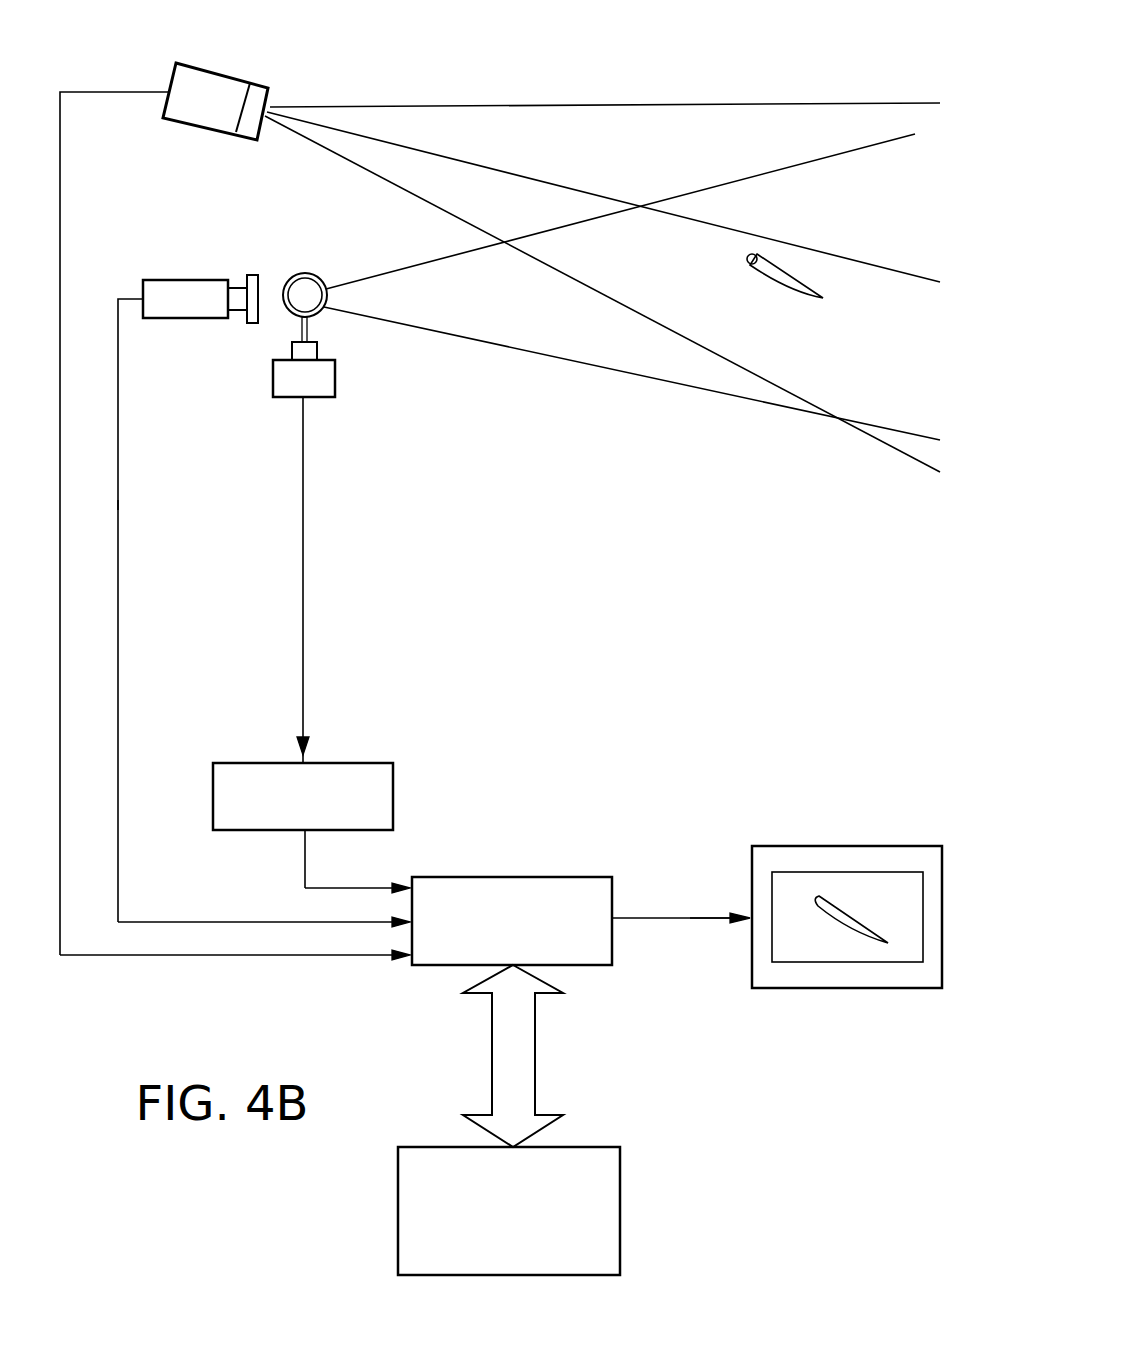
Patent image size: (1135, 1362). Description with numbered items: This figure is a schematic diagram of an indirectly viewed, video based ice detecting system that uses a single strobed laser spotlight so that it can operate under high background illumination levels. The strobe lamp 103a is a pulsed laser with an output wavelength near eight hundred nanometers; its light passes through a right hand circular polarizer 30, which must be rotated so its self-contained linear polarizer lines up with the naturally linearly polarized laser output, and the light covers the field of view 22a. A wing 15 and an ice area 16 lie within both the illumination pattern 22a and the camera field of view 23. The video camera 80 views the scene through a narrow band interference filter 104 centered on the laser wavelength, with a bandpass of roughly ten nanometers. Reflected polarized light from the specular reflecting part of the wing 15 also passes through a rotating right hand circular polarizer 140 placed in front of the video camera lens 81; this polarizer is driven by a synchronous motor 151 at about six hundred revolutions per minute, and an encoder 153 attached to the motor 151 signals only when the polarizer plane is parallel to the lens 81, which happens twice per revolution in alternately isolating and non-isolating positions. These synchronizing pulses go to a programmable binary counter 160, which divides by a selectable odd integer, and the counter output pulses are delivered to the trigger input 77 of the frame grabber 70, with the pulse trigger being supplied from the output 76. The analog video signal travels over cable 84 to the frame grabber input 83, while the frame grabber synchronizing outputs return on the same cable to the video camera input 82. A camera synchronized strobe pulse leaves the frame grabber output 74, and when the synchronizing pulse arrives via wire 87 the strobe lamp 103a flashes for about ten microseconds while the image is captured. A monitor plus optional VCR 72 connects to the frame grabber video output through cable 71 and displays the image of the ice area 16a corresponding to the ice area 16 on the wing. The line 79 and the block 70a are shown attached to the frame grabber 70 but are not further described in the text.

The strobe lamp 103a is at (207, 77).
The right hand circular polarizer 30 is at (260, 82).
The field of view 22a is at (633, 105).
The camera field of view 23 is at (662, 382).
The wing 15 is at (805, 283).
The ice area 16 is at (752, 263).
The video camera 80 is at (195, 313).
The video camera lens 81 is at (240, 310).
The narrow band interference filter 104 is at (258, 275).
The video camera input 82 is at (130, 292).
The cable 84 is at (118, 508).
The frame grabber input 83 is at (365, 920).
The wire 87 is at (63, 868).
The frame grabber output 74 is at (378, 962).
The rotating right hand circular polarizer 140 is at (303, 277).
The encoder 153 is at (312, 347).
The motor 151 is at (313, 383).
The programmable binary counter 160 is at (360, 762).
The output 76 is at (302, 848).
The trigger input 77 is at (357, 887).
The frame grabber 70 is at (523, 876).
The cable 71 is at (677, 918).
The output line 79 is at (720, 920).
The monitor plus VCR 72 is at (770, 846).
The image of ice area 16a is at (838, 907).
The digital memory buffer 70a is at (403, 1230).